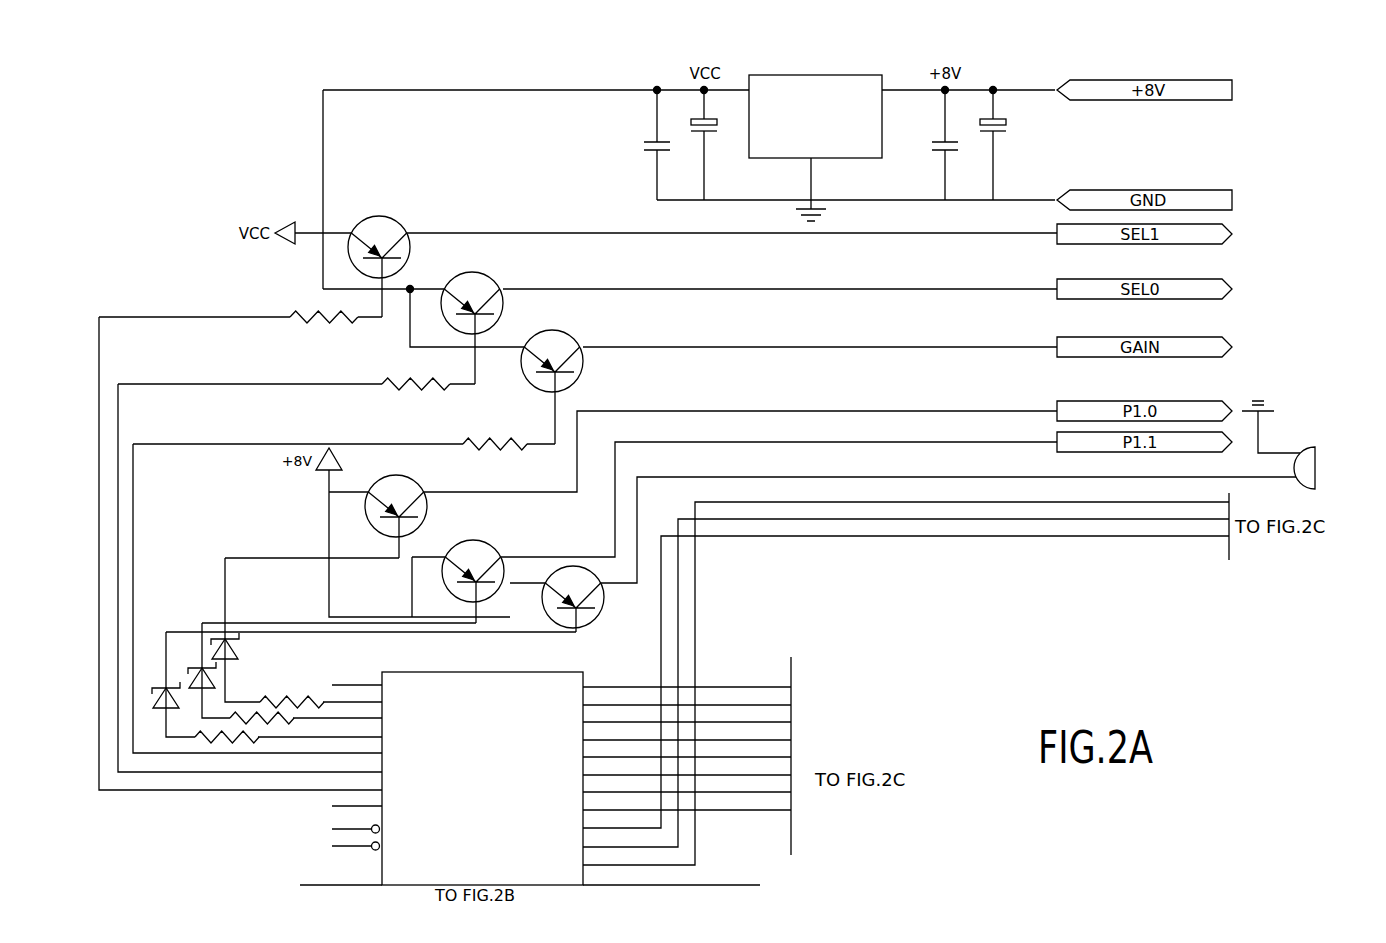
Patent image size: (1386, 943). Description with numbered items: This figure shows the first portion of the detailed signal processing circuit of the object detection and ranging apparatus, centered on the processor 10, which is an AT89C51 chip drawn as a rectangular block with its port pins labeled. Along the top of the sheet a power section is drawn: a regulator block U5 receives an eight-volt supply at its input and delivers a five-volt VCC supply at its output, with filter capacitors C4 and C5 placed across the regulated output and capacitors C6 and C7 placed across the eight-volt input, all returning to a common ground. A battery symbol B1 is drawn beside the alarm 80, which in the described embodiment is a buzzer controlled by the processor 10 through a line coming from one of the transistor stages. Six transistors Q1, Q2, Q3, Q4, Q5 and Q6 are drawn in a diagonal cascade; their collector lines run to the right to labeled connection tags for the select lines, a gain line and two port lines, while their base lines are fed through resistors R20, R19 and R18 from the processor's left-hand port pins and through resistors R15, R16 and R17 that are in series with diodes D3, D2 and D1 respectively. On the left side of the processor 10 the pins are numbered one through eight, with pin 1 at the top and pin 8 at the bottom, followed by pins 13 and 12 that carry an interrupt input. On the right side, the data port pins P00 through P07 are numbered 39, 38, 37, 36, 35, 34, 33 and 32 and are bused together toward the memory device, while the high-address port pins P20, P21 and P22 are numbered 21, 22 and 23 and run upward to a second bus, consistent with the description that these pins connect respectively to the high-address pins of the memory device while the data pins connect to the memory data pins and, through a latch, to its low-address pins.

The processor 10 is at (764, 690).
The alarm 80 is at (1317, 467).
The voltage regulator U5 is at (815, 137).
The battery B1 is at (1271, 425).
The transistor Q1 is at (370, 263).
The transistor Q2 is at (463, 325).
The transistor Q3 is at (541, 384).
The transistor Q4 is at (388, 516).
The transistor Q5 is at (469, 578).
The transistor Q6 is at (567, 596).
The resistor R15 is at (292, 695).
The resistor R16 is at (251, 713).
The resistor R17 is at (216, 731).
The resistor R18 is at (495, 455).
The resistor R19 is at (416, 396).
The resistor R20 is at (324, 329).
The diode D1 is at (160, 688).
The diode D2 is at (196, 667).
The diode D3 is at (240, 646).
The capacitor C4 is at (651, 145).
The capacitor C5 is at (703, 145).
The capacitor C6 is at (939, 145).
The capacitor C7 is at (992, 145).
The pin 1 of U1 1 is at (357, 676).
The pin 8 of U1 8 is at (357, 797).
The pin 12 of U1 12 is at (356, 839).
The pin 13 of U1 13 is at (356, 822).
The pin 21 of U1 21 is at (906, 682).
The pin 22 of U1 22 is at (906, 683).
The pin 23 of U1 23 is at (617, 645).
The pin 32 of U1 32 is at (687, 801).
The pin 33 of U1 33 is at (687, 783).
The pin 34 of U1 34 is at (687, 766).
The pin 35 of U1 35 is at (687, 748).
The pin 36 of U1 36 is at (687, 731).
The pin 37 of U1 37 is at (687, 713).
The pin 38 of U1 38 is at (687, 696).
The pin 39 of U1 39 is at (687, 678).